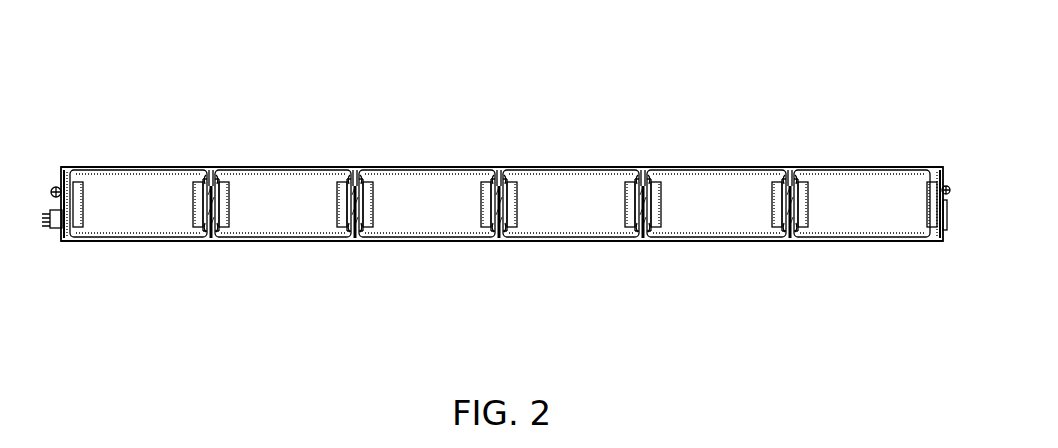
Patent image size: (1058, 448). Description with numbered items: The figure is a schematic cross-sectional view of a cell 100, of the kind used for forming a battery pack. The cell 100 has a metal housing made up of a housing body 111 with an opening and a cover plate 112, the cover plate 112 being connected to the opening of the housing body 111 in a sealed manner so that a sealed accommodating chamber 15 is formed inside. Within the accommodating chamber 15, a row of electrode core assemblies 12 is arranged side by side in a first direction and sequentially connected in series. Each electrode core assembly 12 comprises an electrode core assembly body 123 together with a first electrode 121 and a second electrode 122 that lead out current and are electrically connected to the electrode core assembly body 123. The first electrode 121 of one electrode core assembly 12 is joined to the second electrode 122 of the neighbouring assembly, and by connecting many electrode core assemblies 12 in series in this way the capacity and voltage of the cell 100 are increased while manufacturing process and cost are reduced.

The cell 100 is at (450, 44).
The electrode core assembly 12 is at (242, 189).
The electrode core assembly body 123 is at (298, 190).
The accommodating chamber 15 is at (607, 171).
The cover plate 112 is at (58, 202).
The second electrode 122 is at (199, 210).
The first electrode 121 is at (218, 205).
The housing body 111 is at (690, 241).